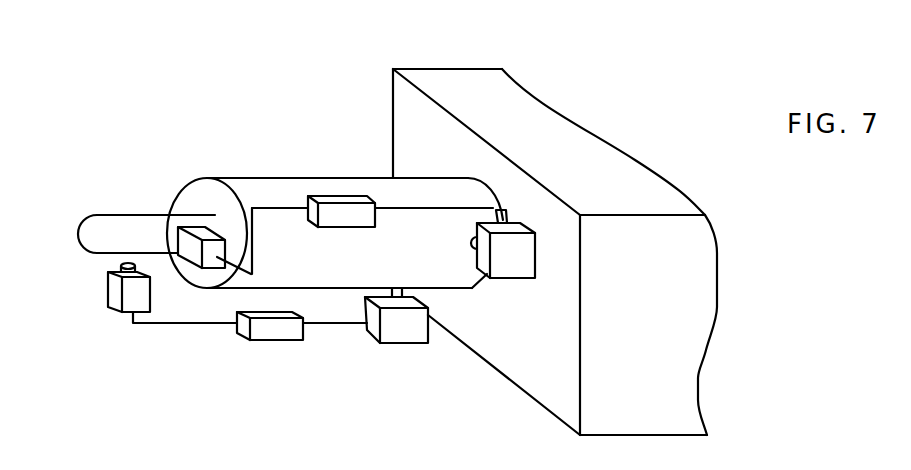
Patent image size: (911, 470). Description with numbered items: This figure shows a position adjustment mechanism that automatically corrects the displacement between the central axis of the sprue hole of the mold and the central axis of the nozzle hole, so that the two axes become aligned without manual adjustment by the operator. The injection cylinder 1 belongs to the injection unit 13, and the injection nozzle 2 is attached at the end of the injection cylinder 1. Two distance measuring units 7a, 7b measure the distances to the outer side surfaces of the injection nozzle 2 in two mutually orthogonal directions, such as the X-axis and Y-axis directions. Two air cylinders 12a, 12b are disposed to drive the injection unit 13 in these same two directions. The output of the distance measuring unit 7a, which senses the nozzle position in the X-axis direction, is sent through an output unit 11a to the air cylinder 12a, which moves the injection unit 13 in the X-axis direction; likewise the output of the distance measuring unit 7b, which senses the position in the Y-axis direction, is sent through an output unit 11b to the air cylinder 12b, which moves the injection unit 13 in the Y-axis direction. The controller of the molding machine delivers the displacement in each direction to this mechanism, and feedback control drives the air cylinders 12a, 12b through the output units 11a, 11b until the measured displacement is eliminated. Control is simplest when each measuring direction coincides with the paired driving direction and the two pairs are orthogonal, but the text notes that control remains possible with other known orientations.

The injection cylinder 1 is at (260, 178).
The injection nozzle 2 is at (132, 213).
The distance measuring unit 7a is at (207, 232).
The distance measuring unit 7b is at (108, 287).
The output unit 11a is at (337, 196).
The output unit 11b is at (272, 340).
The air cylinder 12a is at (507, 222).
The air cylinder 12b is at (393, 343).
The injection unit 13 is at (623, 157).